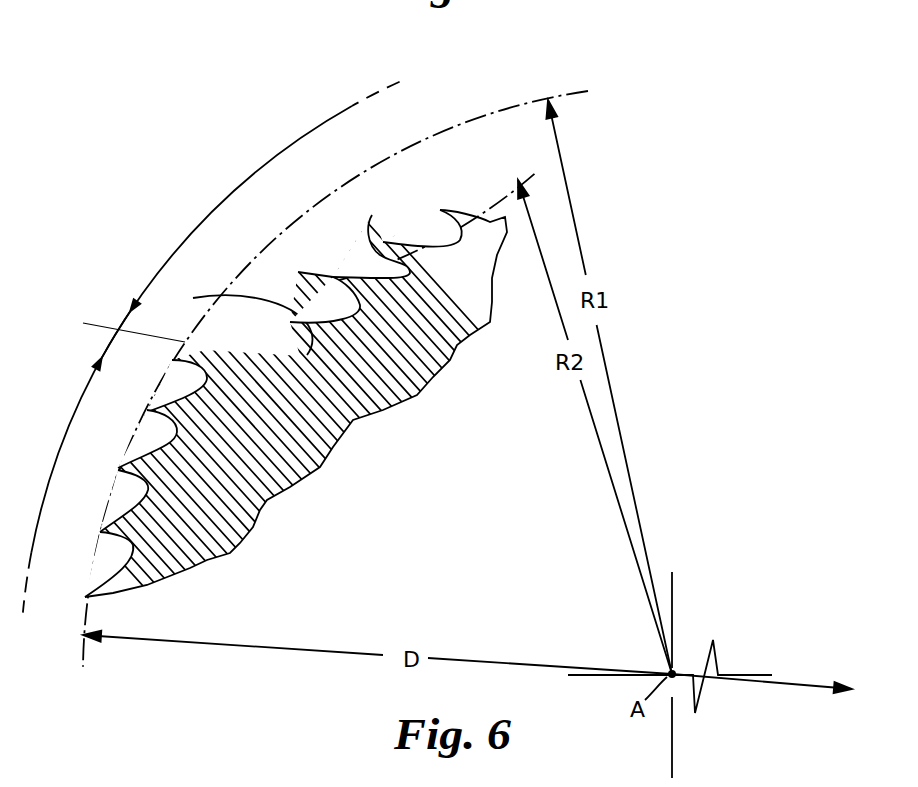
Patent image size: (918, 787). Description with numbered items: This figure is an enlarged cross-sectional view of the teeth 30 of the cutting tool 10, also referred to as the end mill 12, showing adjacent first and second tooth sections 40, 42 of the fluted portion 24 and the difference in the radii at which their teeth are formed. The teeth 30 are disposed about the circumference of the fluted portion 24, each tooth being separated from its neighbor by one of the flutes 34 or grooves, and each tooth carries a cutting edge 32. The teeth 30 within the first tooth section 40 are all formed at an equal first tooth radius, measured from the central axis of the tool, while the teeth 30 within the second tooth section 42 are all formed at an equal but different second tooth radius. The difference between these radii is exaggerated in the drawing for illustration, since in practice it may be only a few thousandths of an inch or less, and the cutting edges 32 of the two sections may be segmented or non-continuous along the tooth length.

The cutting tool 10 is at (745, 28).
The end mill 12 is at (687, 48).
The fluted portion 24 is at (673, 183).
The teeth 30 is at (173, 359).
The cutting edge 32 is at (310, 316).
The flutes 34 is at (447, 240).
The first tooth section 40 is at (83, 397).
The second tooth section 42 is at (197, 230).